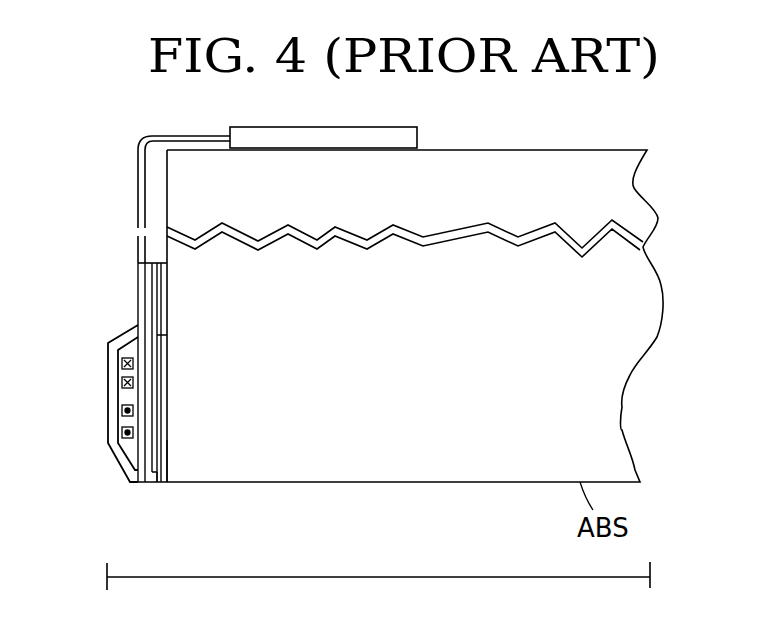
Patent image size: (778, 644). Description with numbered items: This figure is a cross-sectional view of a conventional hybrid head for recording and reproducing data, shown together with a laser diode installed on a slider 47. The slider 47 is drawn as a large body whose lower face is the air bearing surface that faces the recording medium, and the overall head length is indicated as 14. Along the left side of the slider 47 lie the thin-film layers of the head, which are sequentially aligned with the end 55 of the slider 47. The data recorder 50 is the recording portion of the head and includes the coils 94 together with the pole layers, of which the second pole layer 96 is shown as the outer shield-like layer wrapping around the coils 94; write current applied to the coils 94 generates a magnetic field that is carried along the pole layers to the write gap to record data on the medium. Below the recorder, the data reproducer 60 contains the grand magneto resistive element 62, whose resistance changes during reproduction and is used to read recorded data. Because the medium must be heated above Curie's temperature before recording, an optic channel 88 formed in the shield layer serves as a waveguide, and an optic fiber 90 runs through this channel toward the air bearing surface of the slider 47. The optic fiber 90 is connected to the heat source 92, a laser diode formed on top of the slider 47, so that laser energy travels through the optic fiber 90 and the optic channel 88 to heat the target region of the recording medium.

The magnetic head slider 14 is at (447, 577).
The slider 47 is at (406, 362).
The write head 50 is at (102, 382).
The end of the slider 55 is at (208, 483).
The data recorder 60 is at (98, 448).
The grand magneto resistive element 62 is at (155, 483).
The optic channel 88 is at (138, 288).
The optic fiber 90 is at (138, 172).
The heat source 92 is at (417, 137).
The coils 94 is at (122, 410).
The second pole layer 96 is at (108, 353).